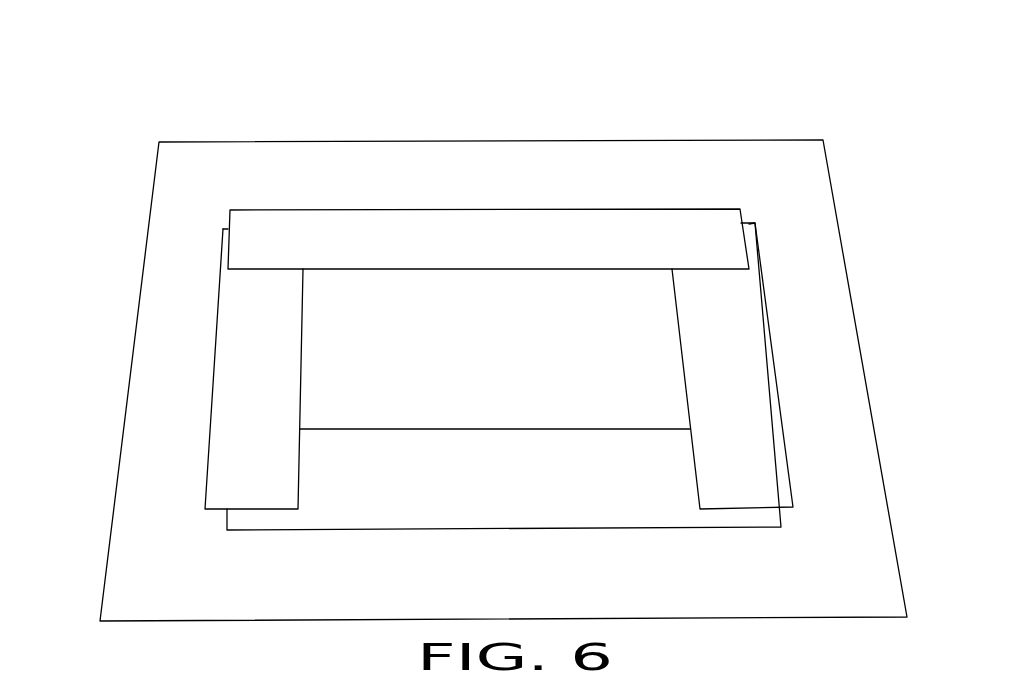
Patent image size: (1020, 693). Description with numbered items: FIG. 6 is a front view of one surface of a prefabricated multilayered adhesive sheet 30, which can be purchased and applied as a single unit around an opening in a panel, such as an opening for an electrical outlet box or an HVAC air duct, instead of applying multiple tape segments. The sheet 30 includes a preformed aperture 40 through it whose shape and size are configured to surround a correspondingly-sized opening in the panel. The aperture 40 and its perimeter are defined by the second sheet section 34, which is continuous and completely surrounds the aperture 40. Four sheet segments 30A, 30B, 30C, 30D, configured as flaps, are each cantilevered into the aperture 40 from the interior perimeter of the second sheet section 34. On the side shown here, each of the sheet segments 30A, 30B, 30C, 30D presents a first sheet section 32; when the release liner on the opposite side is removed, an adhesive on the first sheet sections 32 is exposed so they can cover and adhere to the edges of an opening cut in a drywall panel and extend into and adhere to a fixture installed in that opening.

The multilayered adhesive sheet 30 is at (114, 112).
The sheet segment 30A is at (335, 208).
The sheet segment 30B is at (507, 454).
The sheet segment 30C is at (224, 385).
The sheet segment 30D is at (764, 328).
The first sheet section 32 is at (293, 301).
The second sheet section 34 is at (819, 190).
The aperture 40 is at (578, 302).